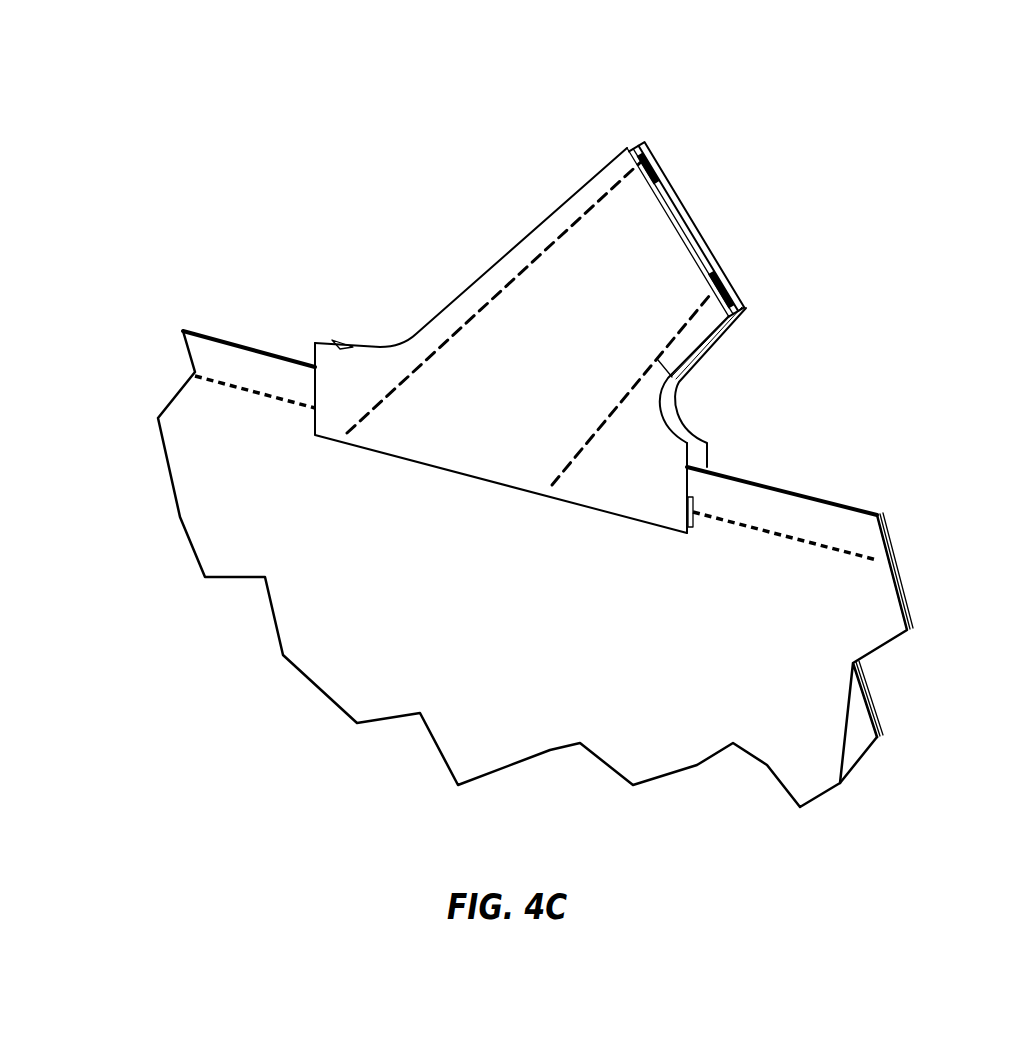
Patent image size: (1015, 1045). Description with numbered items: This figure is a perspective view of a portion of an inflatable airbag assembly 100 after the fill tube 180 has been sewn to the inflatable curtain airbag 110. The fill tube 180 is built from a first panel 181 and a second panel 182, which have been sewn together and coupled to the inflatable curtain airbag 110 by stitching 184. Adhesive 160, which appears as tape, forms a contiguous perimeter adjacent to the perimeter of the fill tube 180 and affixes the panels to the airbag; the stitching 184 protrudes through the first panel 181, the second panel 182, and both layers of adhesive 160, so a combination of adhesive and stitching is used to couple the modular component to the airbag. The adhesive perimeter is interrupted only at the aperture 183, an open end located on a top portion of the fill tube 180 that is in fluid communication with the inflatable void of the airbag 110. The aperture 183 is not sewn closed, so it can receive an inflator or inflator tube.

The inflatable airbag assembly 100 is at (910, 163).
The inflatable curtain airbag 110 is at (855, 465).
The adhesive 160 is at (655, 157).
The fill tube 180 is at (728, 222).
The first panel 181 is at (620, 322).
The second panel 182 is at (680, 210).
The aperture 183 is at (707, 263).
The stitching 184 is at (690, 388).